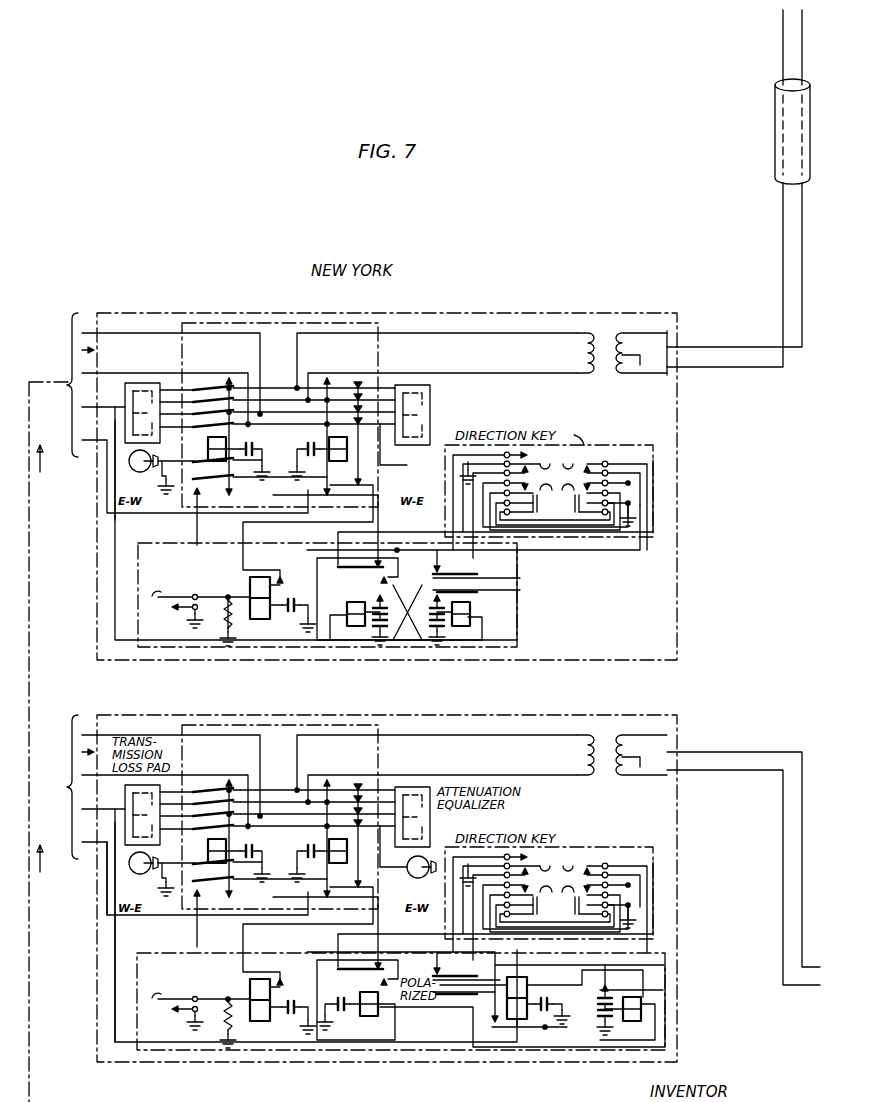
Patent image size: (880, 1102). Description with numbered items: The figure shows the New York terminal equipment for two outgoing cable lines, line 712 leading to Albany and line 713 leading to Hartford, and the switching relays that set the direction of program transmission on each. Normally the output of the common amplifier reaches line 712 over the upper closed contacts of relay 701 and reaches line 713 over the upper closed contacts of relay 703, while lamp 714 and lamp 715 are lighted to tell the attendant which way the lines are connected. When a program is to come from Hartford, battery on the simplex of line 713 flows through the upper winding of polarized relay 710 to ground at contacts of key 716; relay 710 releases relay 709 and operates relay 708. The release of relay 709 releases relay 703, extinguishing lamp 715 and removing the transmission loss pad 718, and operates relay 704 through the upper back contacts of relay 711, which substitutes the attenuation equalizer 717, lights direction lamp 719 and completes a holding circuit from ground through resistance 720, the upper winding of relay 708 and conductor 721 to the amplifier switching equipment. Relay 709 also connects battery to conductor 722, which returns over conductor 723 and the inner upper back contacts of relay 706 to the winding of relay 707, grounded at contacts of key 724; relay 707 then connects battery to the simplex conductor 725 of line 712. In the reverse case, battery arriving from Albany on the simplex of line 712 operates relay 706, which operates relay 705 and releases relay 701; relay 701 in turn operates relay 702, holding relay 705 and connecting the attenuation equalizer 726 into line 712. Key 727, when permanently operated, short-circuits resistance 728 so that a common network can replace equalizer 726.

The relay 701 is at (208, 448).
The relay 702 is at (347, 447).
The relay 703 is at (208, 850).
The relay 704 is at (347, 849).
The relay 705 is at (250, 588).
The relay 706 is at (356, 600).
The relay 707 is at (470, 617).
The relay 708 is at (250, 990).
The relay 709 is at (358, 1018).
The polarized relay 710 is at (522, 1025).
The relay 711 is at (627, 1026).
The line 712 is at (792, 270).
The line 713 is at (735, 762).
The lamp 714 is at (156, 473).
The lamp 715 is at (156, 876).
The key 716 is at (556, 905).
The attenuation equalizer 717 is at (431, 842).
The transmission loss pad 718 is at (160, 787).
The direction lamp 719 is at (420, 878).
The resistance 720 is at (220, 1014).
The conductor 721 is at (106, 876).
The conductor 722 is at (114, 902).
The conductor 723 is at (117, 529).
The key 724 is at (556, 503).
The simplex conductor 725 is at (665, 398).
The attenuation equalizer 726 is at (435, 444).
The key 727 is at (165, 600).
The resistance 728 is at (222, 612).